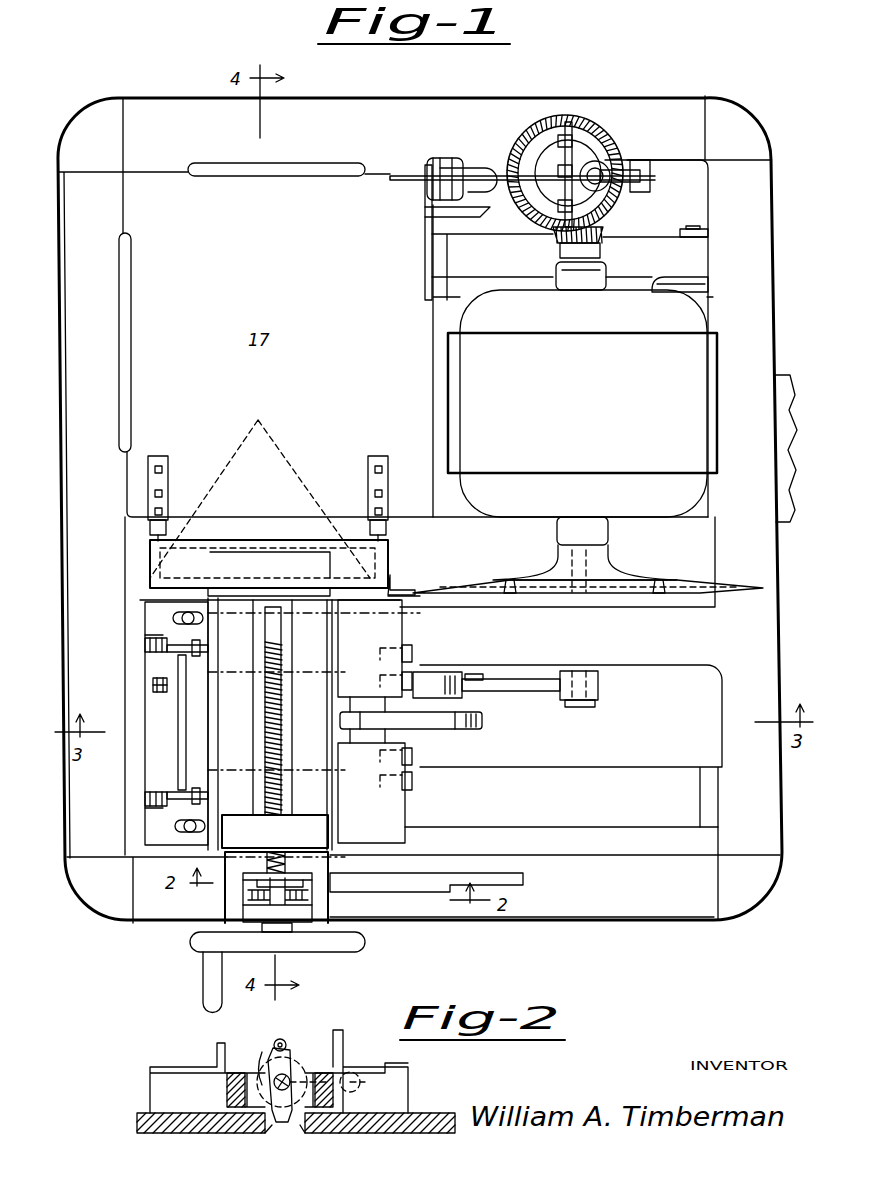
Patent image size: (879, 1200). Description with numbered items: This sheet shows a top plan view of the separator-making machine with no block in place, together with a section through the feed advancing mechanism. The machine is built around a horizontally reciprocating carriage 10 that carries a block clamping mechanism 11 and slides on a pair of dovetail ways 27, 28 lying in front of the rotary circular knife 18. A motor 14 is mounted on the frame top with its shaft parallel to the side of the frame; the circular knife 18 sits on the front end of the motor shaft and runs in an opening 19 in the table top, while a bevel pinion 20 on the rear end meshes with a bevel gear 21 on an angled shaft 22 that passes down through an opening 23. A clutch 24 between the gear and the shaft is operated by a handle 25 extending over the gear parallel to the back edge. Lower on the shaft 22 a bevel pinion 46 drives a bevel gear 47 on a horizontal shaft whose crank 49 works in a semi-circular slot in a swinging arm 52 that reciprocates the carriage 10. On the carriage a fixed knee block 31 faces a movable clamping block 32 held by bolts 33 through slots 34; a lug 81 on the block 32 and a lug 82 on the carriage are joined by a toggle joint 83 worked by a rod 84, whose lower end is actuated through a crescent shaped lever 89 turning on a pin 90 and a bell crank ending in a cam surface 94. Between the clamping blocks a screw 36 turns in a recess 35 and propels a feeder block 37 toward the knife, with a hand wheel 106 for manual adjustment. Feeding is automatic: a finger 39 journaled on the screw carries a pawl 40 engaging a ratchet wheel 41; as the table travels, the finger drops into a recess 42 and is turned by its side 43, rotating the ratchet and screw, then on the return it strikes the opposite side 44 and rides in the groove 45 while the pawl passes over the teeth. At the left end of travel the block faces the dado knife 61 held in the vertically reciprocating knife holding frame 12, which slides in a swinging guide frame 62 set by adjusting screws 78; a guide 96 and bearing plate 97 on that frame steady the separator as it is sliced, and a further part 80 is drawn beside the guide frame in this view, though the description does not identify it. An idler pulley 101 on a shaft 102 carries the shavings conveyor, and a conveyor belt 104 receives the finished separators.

In FIG. 1, the reciprocating carriage 10 is at (410, 808).
In FIG. 1, the block clamping mechanism 11 is at (218, 790).
In FIG. 1, the knife holding frame 12 is at (260, 489).
In FIG. 1, the motor 14 is at (582, 389).
In FIG. 1, the circular knife 18 is at (645, 590).
In FIG. 1, the opening 19 is at (675, 595).
In FIG. 1, the bevel pinion 20 is at (606, 238).
In FIG. 1, the bevel gear 21 is at (548, 135).
In FIG. 1, the shaft 22 is at (487, 175).
In FIG. 1, the opening 23 is at (421, 166).
In FIG. 1, the clutch 24 is at (598, 165).
In FIG. 1, the handle 25 is at (392, 182).
In FIG. 1, the way 27 is at (685, 640).
In FIG. 1, the way 28 is at (660, 785).
In FIG. 1, the knee block 31 is at (332, 618).
In FIG. 1, the clamping block 32 is at (213, 628).
In FIG. 1, the bolts 33 is at (170, 843).
In FIG. 1, the slots 34 is at (176, 826).
In FIG. 1, the recess 35 is at (258, 762).
In FIG. 1, the screw 36 is at (268, 728).
In FIG. 2, the screw 36 is at (290, 1082).
In FIG. 1, the feeder block 37 is at (275, 831).
In FIG. 1, the finger 39 is at (253, 883).
In FIG. 2, the finger 39 is at (285, 1080).
In FIG. 1, the pawl 40 is at (260, 898).
In FIG. 2, the pawl 40 is at (283, 1045).
In FIG. 1, the ratchet wheel 41 is at (312, 898).
In FIG. 2, the ratchet wheel 41 is at (262, 1070).
In FIG. 2, the recess 42 is at (295, 1122).
In FIG. 2, the side of recess 43 is at (262, 1138).
In FIG. 2, the opposite side of recess 44 is at (305, 1122).
In FIG. 1, the groove 45 is at (392, 878).
In FIG. 2, the groove 45 is at (410, 1110).
In FIG. 1, the bevel pinion 46 is at (430, 203).
In FIG. 1, the bevel gear 47 is at (437, 215).
In FIG. 1, the crank 49 is at (430, 685).
In FIG. 1, the swinging arm 52 is at (435, 717).
In FIG. 1, the dado knife 61 is at (225, 590).
In FIG. 1, the guide frame 62 is at (150, 565).
In FIG. 1, the adjusting screws 78 is at (370, 510).
In FIG. 1, the plate 80 is at (378, 598).
In FIG. 1, the lug 81 is at (197, 788).
In FIG. 1, the lug 82 is at (145, 800).
In FIG. 1, the toggle joint 83 is at (150, 792).
In FIG. 1, the rod 84 is at (153, 688).
In FIG. 1, the crescent shaped lever 89 is at (508, 690).
In FIG. 1, the pin 90 is at (585, 705).
In FIG. 1, the cam surface 94 is at (470, 676).
In FIG. 1, the guide 96 is at (398, 580).
In FIG. 1, the bearing plate 97 is at (415, 590).
In FIG. 1, the idler pulley 101 is at (692, 288).
In FIG. 1, the shaft 102 is at (698, 229).
In FIG. 1, the conveyor belt 104 is at (785, 385).
In FIG. 1, the hand wheel 106 is at (208, 942).